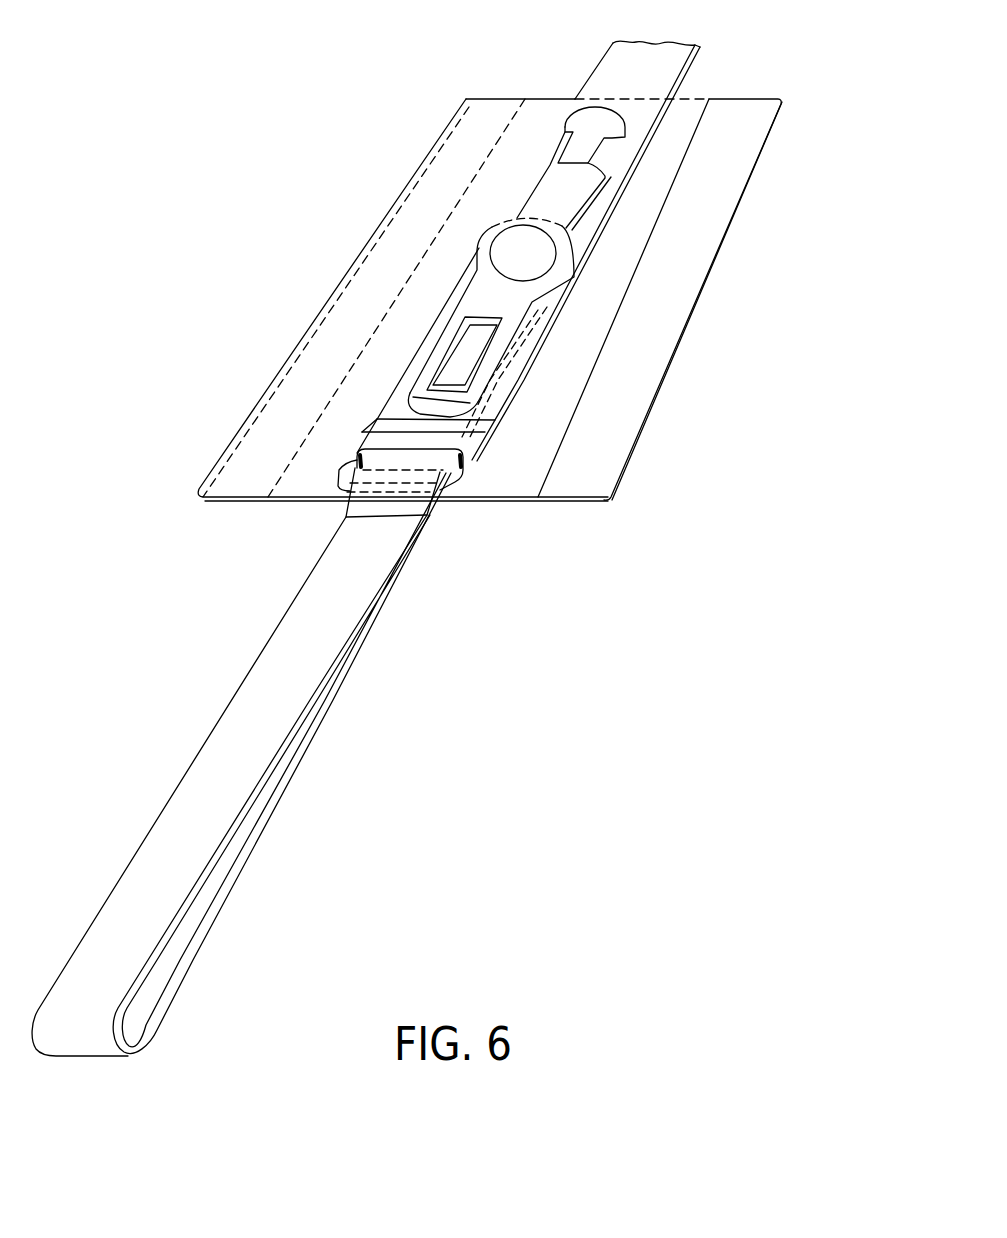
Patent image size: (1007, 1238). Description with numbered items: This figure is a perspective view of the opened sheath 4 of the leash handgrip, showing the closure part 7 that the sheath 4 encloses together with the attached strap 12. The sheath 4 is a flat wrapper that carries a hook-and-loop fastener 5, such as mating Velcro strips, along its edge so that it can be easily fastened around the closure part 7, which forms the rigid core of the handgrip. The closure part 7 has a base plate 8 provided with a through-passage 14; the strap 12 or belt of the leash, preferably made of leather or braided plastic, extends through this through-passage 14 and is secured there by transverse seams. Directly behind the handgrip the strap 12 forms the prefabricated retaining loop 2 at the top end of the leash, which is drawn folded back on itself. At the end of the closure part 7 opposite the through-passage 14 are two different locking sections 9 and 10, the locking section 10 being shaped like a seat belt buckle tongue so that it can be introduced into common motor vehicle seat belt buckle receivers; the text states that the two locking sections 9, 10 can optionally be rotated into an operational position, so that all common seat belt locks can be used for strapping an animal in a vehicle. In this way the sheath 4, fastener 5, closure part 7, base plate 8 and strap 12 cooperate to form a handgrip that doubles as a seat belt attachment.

The retaining loop 2 is at (165, 1001).
The sheath 4 is at (378, 260).
The hook-and-loop fastener 5 is at (674, 295).
The closure part 7 is at (544, 188).
The base plate 8 is at (388, 407).
The locking section 9 is at (470, 352).
The locking section 10 is at (588, 118).
The strap 12 is at (658, 52).
The through-passage 14 is at (358, 462).